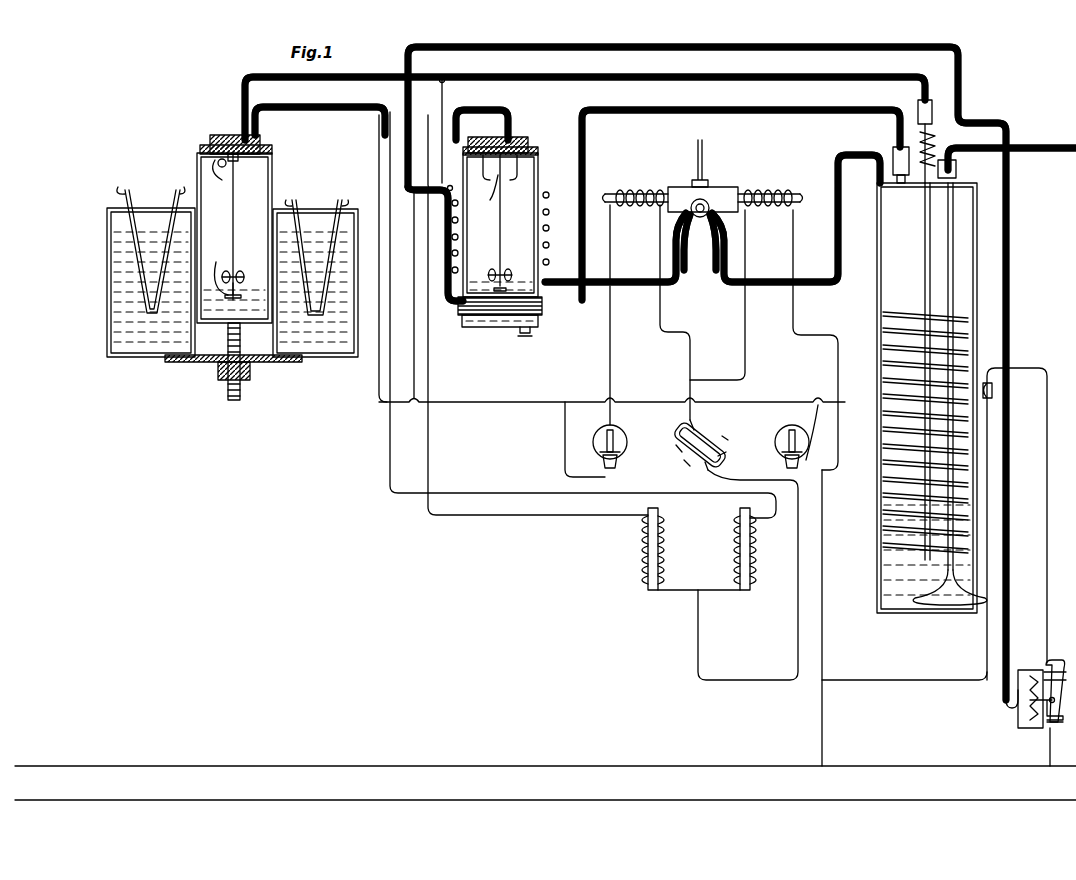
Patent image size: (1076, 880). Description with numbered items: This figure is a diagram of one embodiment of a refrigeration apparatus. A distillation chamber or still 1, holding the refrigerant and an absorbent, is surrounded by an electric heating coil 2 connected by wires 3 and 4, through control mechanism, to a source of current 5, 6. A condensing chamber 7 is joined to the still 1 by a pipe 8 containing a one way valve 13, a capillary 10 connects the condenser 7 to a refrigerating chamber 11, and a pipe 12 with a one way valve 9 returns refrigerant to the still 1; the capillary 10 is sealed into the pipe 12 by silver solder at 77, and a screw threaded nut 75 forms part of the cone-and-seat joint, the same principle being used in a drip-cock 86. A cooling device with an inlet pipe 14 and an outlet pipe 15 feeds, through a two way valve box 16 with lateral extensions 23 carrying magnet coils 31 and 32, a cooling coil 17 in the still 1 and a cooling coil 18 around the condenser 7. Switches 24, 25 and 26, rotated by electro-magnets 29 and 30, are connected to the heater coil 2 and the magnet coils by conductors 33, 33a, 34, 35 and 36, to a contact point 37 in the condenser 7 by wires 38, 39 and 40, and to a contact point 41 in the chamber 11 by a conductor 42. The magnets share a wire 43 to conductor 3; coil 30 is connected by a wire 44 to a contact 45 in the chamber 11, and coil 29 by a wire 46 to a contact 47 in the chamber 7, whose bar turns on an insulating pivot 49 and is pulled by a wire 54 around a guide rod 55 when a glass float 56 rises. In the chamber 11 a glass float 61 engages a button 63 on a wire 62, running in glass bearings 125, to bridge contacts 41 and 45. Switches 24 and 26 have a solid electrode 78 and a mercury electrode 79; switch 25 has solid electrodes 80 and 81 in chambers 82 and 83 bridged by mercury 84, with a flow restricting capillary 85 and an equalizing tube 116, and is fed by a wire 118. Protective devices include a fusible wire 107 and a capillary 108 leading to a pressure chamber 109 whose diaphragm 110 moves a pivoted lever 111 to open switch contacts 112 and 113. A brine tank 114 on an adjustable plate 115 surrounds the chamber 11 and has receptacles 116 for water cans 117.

The distillation chamber or still 1 is at (977, 262).
The electric heating coil 2 is at (877, 440).
The wire 3 is at (1047, 488).
The wire 4 is at (823, 614).
The source of current 5 is at (910, 766).
The source of current 6 is at (903, 792).
The condensing chamber 7 is at (538, 166).
The pipe 8 is at (500, 110).
The one way valve 9 is at (933, 108).
The capillary 10 is at (444, 96).
The refrigerating chamber 11 is at (272, 172).
The pipe 12 is at (570, 78).
The one way valve 13 is at (914, 152).
The inlet pipe 14 is at (703, 144).
The outlet pipe 15 is at (1030, 148).
The two way valve box 16 is at (728, 187).
The cooling coil 17 is at (712, 248).
The cooling coil 18 is at (688, 77).
The lateral extensions 23 is at (606, 196).
The switch 24 is at (622, 438).
The switch 25 is at (720, 440).
The switch 26 is at (786, 425).
The electro-magnet 29 is at (640, 551).
The electro-magnet 30 is at (751, 546).
The magnet coil 31 is at (645, 192).
The magnet coil 32 is at (775, 192).
The conductor 33 is at (838, 377).
The conductor 33a is at (812, 429).
The conductor 34 is at (746, 352).
The conductor 35 is at (664, 333).
The conductor 36 is at (611, 322).
The contact point 37 is at (540, 150).
The wire 38 is at (640, 402).
The wire 39 is at (565, 440).
The wire 40 is at (412, 400).
The contact point 41 is at (240, 165).
The conductor 42 is at (376, 377).
The wire 43 is at (748, 680).
The wire 44 is at (345, 77).
The contact 45 is at (262, 135).
The wire 46 is at (430, 378).
The contact 47 is at (520, 172).
The pivot 49 is at (478, 173).
The wire 54 is at (485, 195).
The guide rod 55 is at (501, 213).
The float 56 is at (509, 268).
The glass float 61 is at (241, 276).
The wire 62 is at (220, 170).
The button 63 is at (216, 274).
The screw threaded nut 75 is at (486, 332).
The silver solder seal 77 is at (441, 80).
The solid electrode 78 is at (606, 438).
The liquid electrode of mercury 79 is at (618, 466).
The solid electrode 80 is at (677, 462).
The solid electrode 81 is at (722, 432).
The chamber 82 is at (667, 442).
The chamber 83 is at (694, 428).
The mercury electrode 84 is at (727, 455).
The flow restricting tube or capillary 85 is at (706, 470).
The drip-cock 86 is at (532, 333).
The fusible wire 107 is at (990, 383).
The capillary 108 is at (1010, 530).
The pressure chamber 109 is at (1022, 670).
The diaphragm 110 is at (1030, 712).
The pivoted lever 111 is at (1056, 660).
The switch contact 112 is at (1030, 698).
The switch contact 113 is at (1052, 728).
The brine tank 114 is at (108, 296).
The adjustable plate 115 is at (248, 377).
The receptacles 116 is at (118, 190).
The cans 117 is at (176, 190).
The wire 118 is at (797, 612).
The glass bearings 125 is at (205, 150).